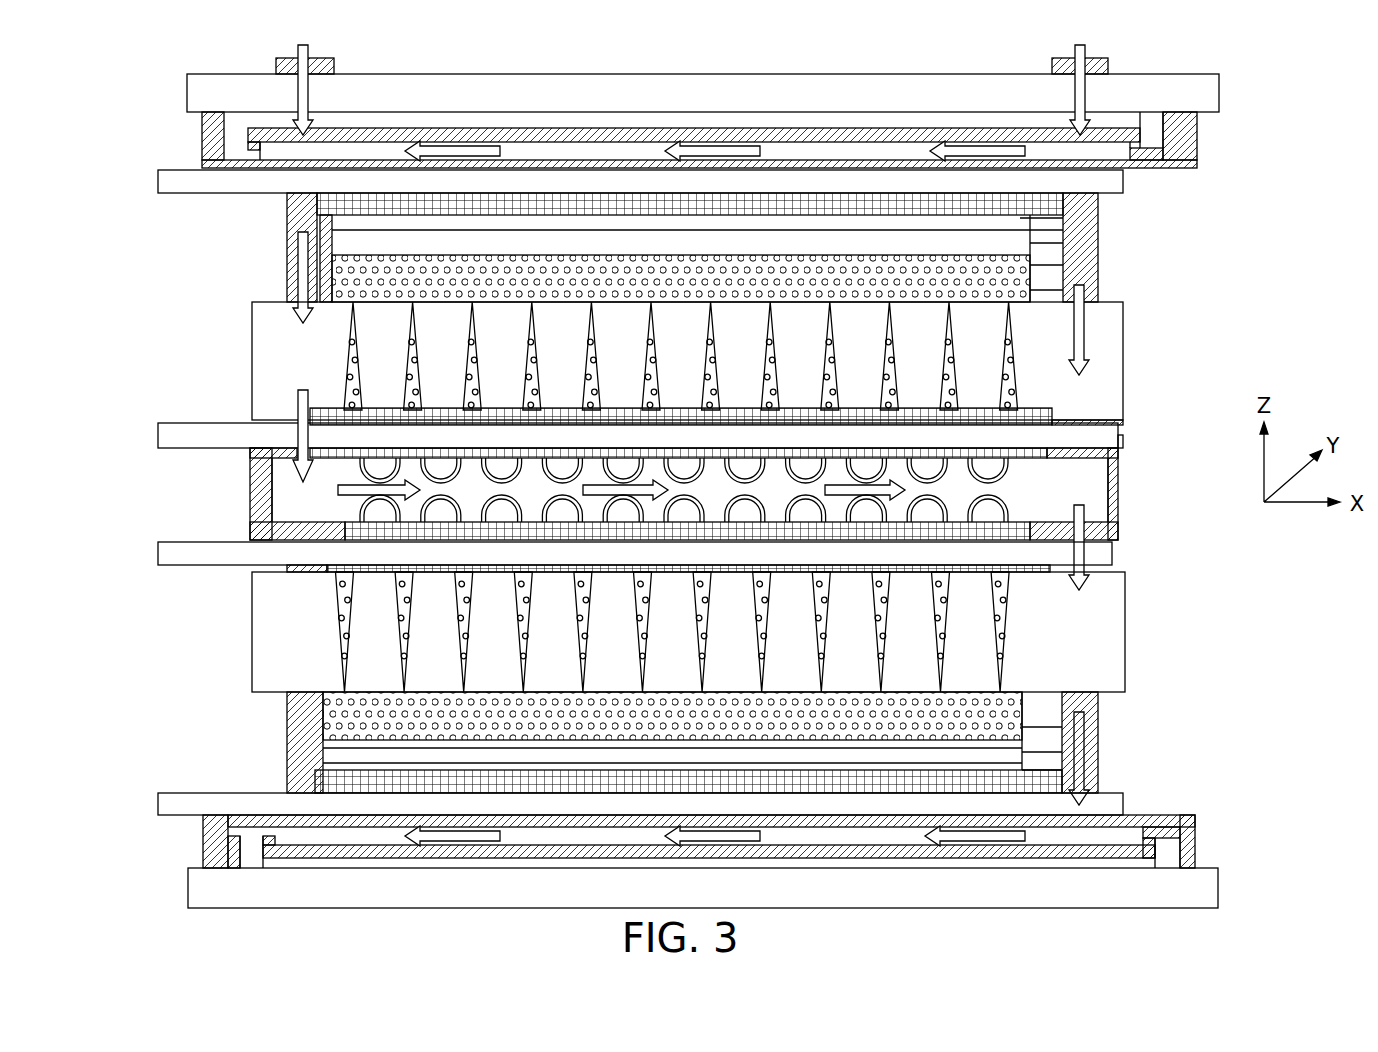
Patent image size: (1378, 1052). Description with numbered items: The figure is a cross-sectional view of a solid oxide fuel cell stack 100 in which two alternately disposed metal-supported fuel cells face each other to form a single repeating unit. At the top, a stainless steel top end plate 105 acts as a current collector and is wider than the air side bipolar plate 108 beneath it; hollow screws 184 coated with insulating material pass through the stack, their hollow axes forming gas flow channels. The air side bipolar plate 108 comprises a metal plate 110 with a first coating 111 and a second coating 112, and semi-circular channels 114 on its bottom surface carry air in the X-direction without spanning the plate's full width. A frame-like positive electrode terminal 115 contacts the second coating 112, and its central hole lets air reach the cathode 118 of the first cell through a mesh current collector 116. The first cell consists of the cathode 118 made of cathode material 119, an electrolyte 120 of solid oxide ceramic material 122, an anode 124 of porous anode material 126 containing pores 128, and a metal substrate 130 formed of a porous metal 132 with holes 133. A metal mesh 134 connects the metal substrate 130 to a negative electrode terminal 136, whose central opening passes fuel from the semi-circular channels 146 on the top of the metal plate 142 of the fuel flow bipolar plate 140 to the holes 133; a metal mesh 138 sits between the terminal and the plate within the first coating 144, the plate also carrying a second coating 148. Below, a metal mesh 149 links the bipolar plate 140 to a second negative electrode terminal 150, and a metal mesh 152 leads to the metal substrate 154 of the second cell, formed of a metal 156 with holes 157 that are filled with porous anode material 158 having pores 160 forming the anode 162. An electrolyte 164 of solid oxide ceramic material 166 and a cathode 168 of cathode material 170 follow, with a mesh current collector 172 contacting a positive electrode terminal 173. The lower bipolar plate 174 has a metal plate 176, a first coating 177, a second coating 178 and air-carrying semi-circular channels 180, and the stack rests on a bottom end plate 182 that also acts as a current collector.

The solid oxide fuel cell stack 100 is at (1280, 96).
The top end plate 105 is at (187, 92).
The air side bipolar plate 108 is at (160, 140).
The metal plate 110 is at (1150, 124).
The first coating 111 is at (527, 135).
The second coating 112 is at (1197, 128).
The semi-circular channels 114 is at (1130, 147).
The positive electrode terminal 115 is at (158, 180).
The mesh current collector 116 is at (1050, 197).
The cathode 118 is at (1030, 243).
The cathode material 119 is at (993, 222).
The electrolyte 120 is at (1030, 265).
The solid oxide ceramic material 122 is at (340, 242).
The anode 124 is at (330, 287).
The porous anode material 126 is at (353, 360).
The pores 128 is at (1017, 343).
The metal substrate 130 is at (1125, 365).
The metal 132 is at (1050, 345).
The holes 133 is at (1010, 390).
The metal mesh 134 is at (320, 415).
The negative electrode terminal 136 is at (1120, 437).
The metal mesh 138 is at (1030, 453).
The fuel flow bipolar plate 140 is at (250, 465).
The metal plate 142 is at (1068, 495).
The first coating 144 is at (262, 490).
The semi-circular channels 146 is at (1040, 530).
The second coating 148 is at (1120, 545).
The metal mesh 149 is at (353, 527).
The negative electrode terminal 150 is at (158, 553).
The metal mesh 152 is at (345, 600).
The metal substrate 154 is at (1125, 645).
The metal 156 is at (1050, 593).
The holes 157 is at (1000, 640).
The porous anode material 158 is at (342, 637).
The pores 160 is at (1022, 708).
The anode 162 is at (1022, 727).
The electrolyte 164 is at (1022, 753).
The solid oxide ceramic material 166 is at (333, 750).
The cathode 168 is at (1062, 780).
The cathode material 170 is at (330, 770).
The mesh current collector 172 is at (320, 782).
The positive electrode terminal 173 is at (158, 803).
The bipolar plate 174 is at (1222, 848).
The metal plate 176 is at (1195, 855).
The first coating 177 is at (955, 850).
The second coating 178 is at (1140, 815).
The semi-circular channels 180 is at (293, 834).
The bottom end plate 182 is at (188, 890).
The hollow screws 184 is at (276, 66).